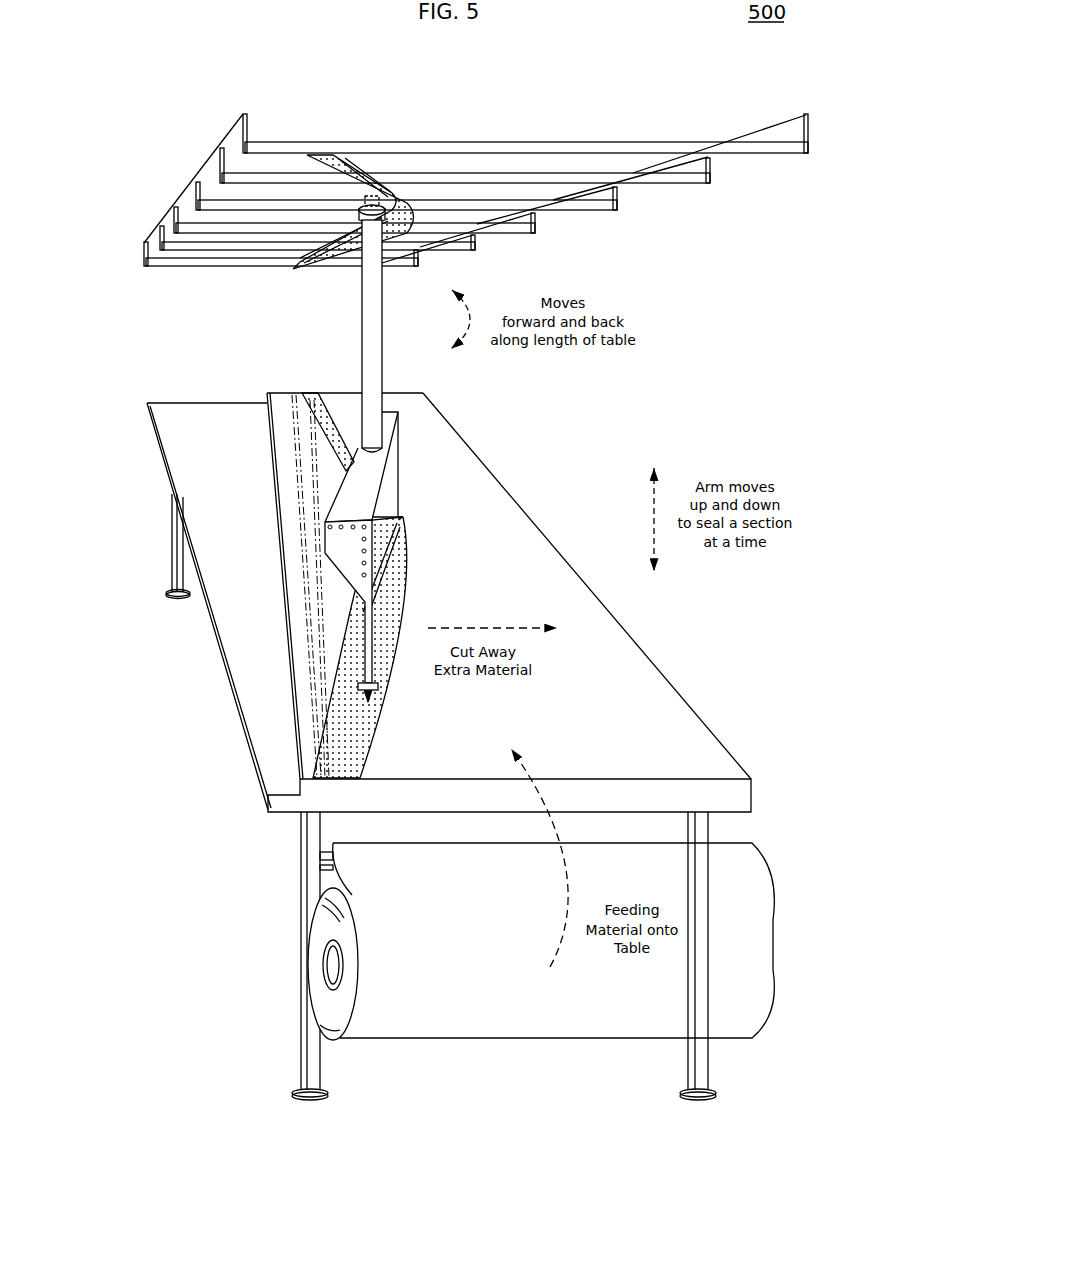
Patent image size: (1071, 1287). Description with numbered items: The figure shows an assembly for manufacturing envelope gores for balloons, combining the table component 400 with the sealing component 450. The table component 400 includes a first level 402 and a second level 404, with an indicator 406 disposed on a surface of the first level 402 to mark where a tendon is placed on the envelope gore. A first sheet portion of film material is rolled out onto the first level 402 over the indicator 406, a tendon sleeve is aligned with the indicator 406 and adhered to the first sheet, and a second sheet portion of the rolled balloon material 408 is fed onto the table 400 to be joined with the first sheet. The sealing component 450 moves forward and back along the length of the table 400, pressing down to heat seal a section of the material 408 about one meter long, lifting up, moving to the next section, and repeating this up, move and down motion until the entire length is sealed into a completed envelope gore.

The table component 400 is at (687, 685).
The first level 402 is at (240, 564).
The second level 404 is at (183, 402).
The indicator 406 is at (308, 568).
The roll of balloon material 408 is at (510, 963).
The sealing component 450 is at (411, 425).